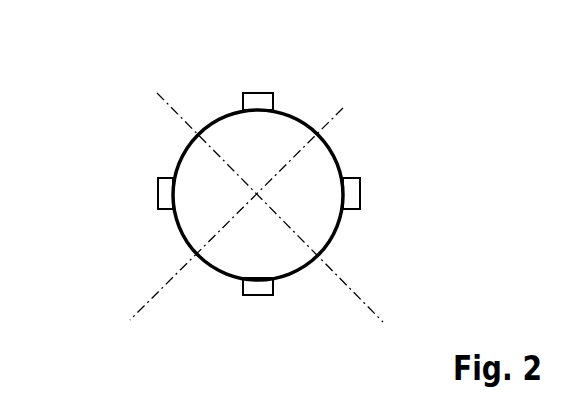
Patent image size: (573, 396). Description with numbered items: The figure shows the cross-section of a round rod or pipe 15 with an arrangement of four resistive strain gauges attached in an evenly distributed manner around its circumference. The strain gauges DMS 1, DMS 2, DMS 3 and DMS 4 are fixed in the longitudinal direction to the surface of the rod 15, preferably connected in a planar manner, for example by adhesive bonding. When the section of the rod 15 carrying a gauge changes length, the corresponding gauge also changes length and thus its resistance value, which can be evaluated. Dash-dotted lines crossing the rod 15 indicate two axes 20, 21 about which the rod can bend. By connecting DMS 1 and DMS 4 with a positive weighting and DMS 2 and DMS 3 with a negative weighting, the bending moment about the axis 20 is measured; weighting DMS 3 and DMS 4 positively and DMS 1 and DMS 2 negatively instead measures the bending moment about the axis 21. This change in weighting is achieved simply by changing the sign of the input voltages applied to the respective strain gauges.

The round rod 15 is at (337, 148).
The first bending axis 20 is at (167, 103).
The second bending axis 21 is at (160, 283).
The strain gauge 1 DMS 1 is at (360, 190).
The strain gauge 2 DMS 2 is at (257, 295).
The strain gauge 3 DMS 3 is at (157, 193).
The strain gauge 4 DMS 4 is at (258, 93).